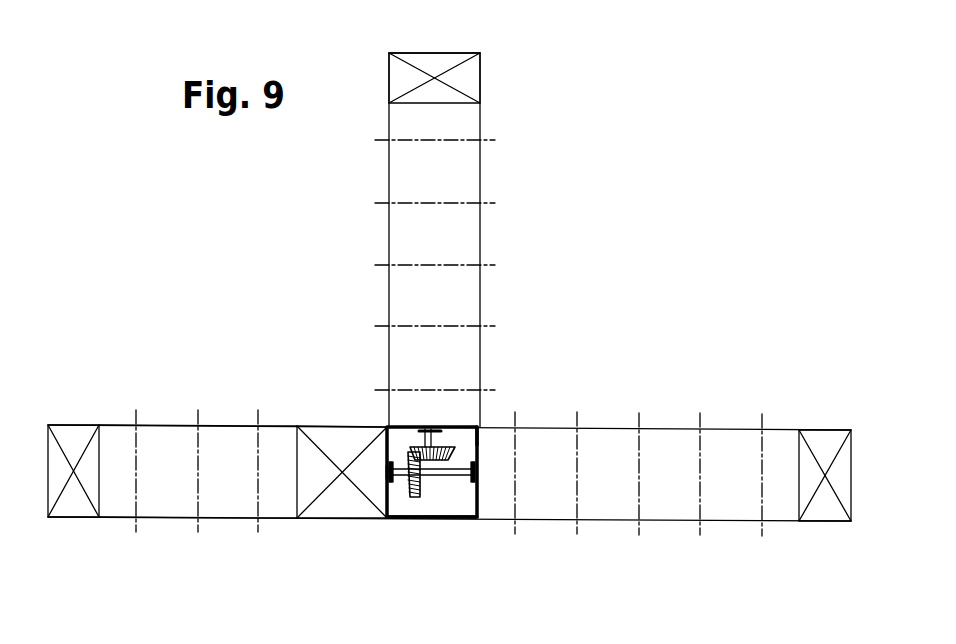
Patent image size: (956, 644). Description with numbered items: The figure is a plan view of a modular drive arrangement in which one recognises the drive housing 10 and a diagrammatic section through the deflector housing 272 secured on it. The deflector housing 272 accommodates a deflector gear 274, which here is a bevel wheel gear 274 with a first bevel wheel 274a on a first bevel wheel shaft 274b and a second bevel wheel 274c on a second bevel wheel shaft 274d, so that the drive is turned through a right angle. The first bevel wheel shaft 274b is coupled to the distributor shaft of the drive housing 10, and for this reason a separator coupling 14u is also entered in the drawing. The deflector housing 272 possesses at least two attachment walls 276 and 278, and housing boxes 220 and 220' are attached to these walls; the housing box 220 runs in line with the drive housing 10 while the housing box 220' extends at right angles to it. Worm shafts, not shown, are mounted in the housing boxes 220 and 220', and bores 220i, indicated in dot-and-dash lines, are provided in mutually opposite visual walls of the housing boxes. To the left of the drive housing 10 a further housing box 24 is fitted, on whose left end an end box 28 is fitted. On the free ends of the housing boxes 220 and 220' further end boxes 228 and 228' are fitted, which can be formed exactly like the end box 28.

The drive housing 10 is at (328, 507).
The separator coupling 14u is at (386, 468).
The housing box 24 is at (228, 503).
The end box 28 is at (75, 507).
The housing box 220 is at (449, 495).
The housing box 220' is at (400, 240).
The bores 220i is at (480, 203).
The end box 228 is at (818, 510).
The end box 228' is at (473, 59).
The deflector housing 272 is at (483, 452).
The deflector gear 274 is at (444, 463).
The first bevel wheel 274a is at (413, 497).
The first bevel wheel shaft 274b is at (477, 492).
The second bevel wheel 274c is at (416, 431).
The second bevel wheel shaft 274d is at (452, 430).
The attachment wall 276 is at (462, 432).
The attachment wall 278 is at (477, 507).